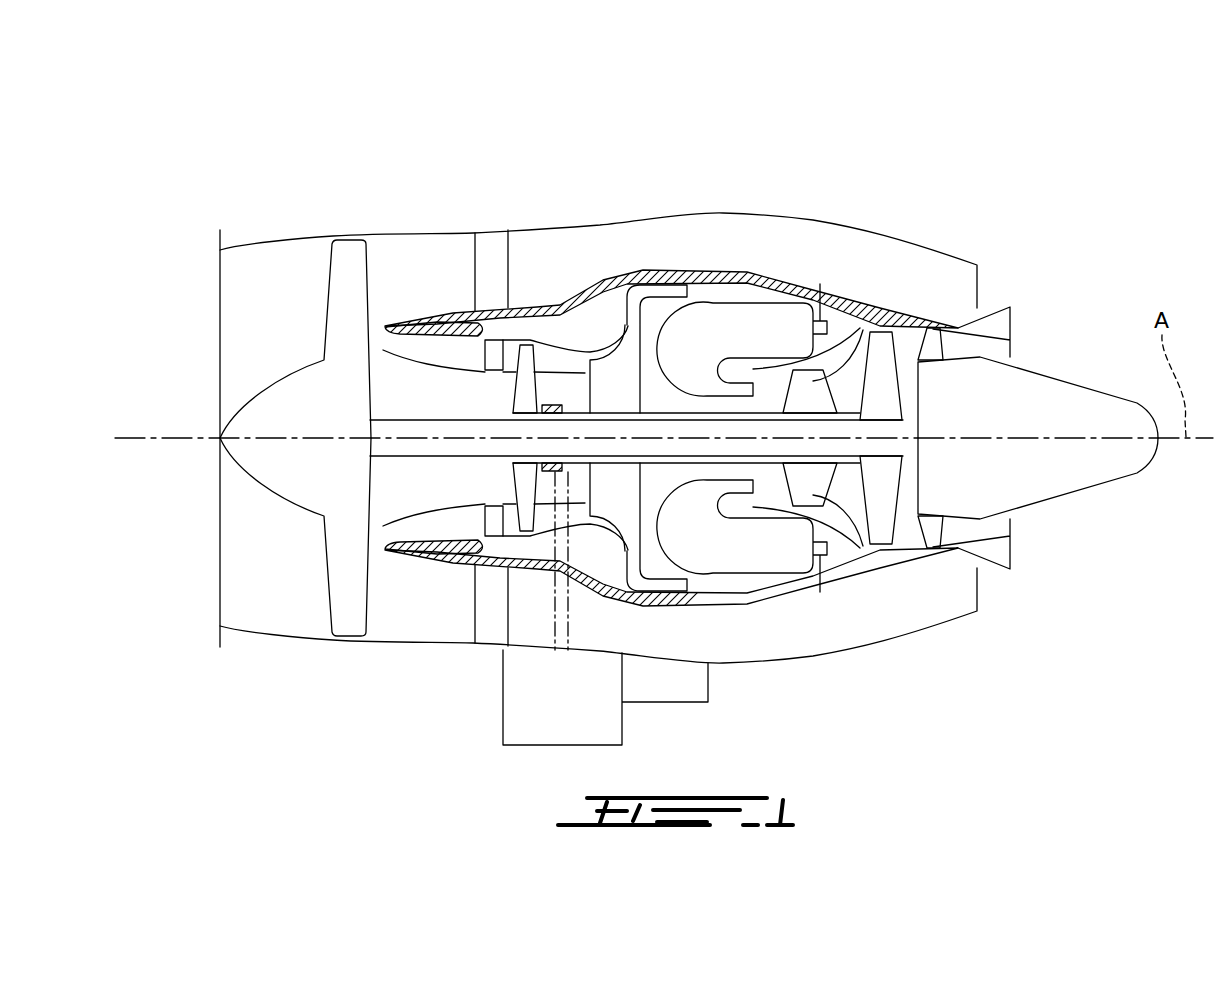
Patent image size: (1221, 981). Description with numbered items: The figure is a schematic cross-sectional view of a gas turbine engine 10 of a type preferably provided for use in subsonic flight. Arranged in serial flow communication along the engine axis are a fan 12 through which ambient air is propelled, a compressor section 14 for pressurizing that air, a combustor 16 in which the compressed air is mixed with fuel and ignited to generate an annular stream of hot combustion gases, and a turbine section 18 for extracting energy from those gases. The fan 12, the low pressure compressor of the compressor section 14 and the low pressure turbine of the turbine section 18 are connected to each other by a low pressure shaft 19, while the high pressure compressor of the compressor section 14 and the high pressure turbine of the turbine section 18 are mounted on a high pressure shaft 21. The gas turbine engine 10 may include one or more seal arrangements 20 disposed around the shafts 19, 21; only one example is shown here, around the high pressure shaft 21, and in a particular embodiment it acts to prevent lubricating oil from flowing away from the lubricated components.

The gas turbine engine 10 is at (862, 157).
The fan 12 is at (343, 567).
The compressor section 14 is at (555, 355).
The combustor 16 is at (737, 320).
The turbine section 18 is at (845, 492).
The low pressure shaft 19 is at (422, 457).
The seal arrangement 20 is at (553, 477).
The high pressure shaft 21 is at (662, 463).